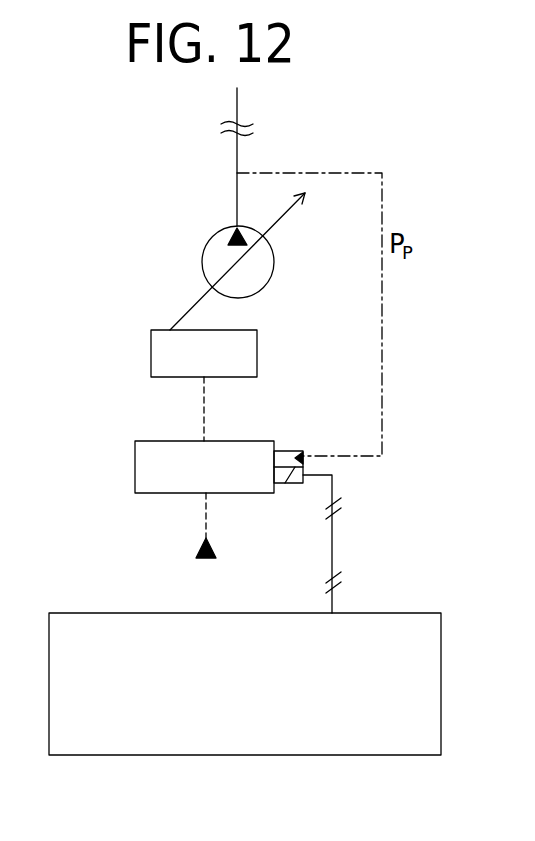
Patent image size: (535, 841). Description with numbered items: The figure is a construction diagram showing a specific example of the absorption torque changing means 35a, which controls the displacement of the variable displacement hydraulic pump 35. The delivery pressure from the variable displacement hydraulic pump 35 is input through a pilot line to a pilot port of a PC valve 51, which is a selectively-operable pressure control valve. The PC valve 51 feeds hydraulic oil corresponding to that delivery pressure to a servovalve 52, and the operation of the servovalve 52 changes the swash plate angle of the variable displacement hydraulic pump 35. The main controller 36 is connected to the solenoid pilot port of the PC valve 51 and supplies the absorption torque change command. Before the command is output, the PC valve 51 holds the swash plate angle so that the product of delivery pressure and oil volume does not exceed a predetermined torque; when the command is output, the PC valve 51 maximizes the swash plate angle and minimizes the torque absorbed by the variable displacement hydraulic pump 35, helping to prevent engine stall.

The variable displacement hydraulic pump 35 is at (208, 240).
The absorption torque changing means 35a is at (127, 315).
The PC valve 51 is at (252, 441).
The servovalve 52 is at (257, 343).
The main controller 36 is at (401, 613).